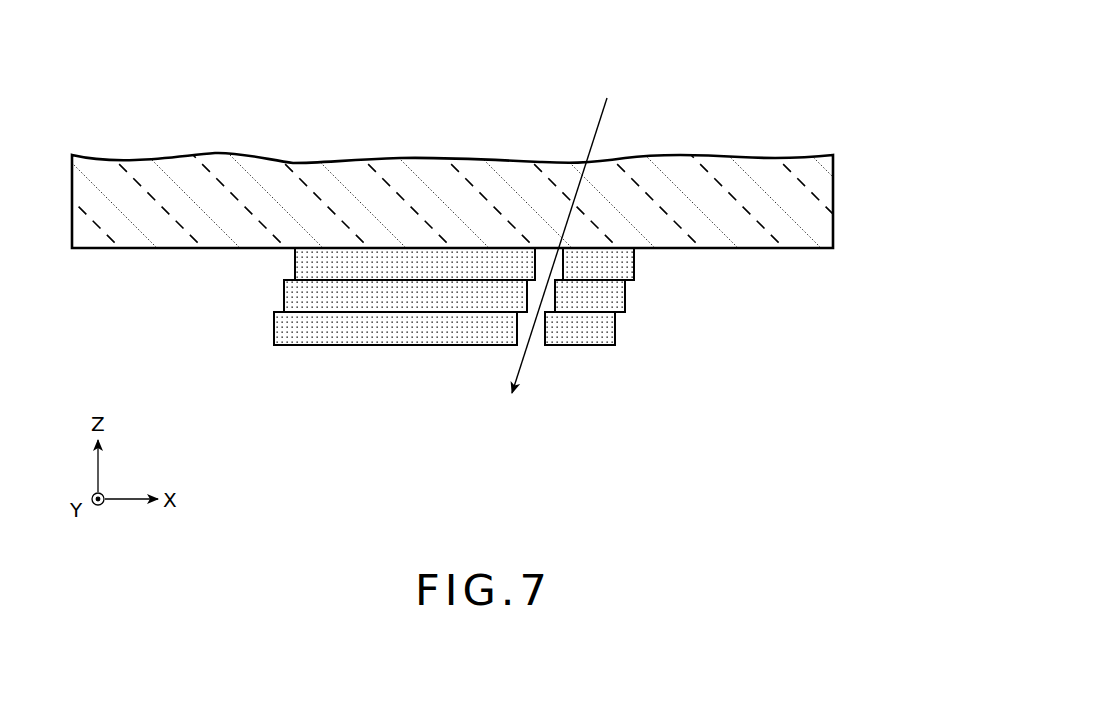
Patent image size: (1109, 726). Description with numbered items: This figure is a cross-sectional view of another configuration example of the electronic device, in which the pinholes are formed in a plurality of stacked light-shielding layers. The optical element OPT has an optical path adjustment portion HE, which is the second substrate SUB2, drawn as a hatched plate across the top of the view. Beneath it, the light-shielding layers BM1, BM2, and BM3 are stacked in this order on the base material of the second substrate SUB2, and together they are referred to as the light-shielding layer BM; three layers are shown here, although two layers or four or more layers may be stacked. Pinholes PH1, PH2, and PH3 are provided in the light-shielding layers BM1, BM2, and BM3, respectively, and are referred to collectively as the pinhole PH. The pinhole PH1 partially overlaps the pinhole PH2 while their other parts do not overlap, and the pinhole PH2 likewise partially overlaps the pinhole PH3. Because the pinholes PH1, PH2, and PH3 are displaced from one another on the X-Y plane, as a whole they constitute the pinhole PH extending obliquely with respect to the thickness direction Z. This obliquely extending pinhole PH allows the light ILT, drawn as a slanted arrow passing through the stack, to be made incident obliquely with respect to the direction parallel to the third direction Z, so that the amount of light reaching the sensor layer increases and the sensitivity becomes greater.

The optical element OPT is at (380, 80).
The light ILT is at (601, 114).
The optical path adjustment portion HE is at (771, 140).
The second substrate SUB2 is at (846, 142).
The light-shielding layer BM is at (459, 297).
The light-shielding layer BM1 is at (300, 268).
The light-shielding layer BM2 is at (290, 298).
The light-shielding layer BM3 is at (282, 329).
The pinhole PH is at (447, 345).
The pinhole PH1 is at (545, 262).
The pinhole PH2 is at (527, 295).
The pinhole PH3 is at (517, 328).